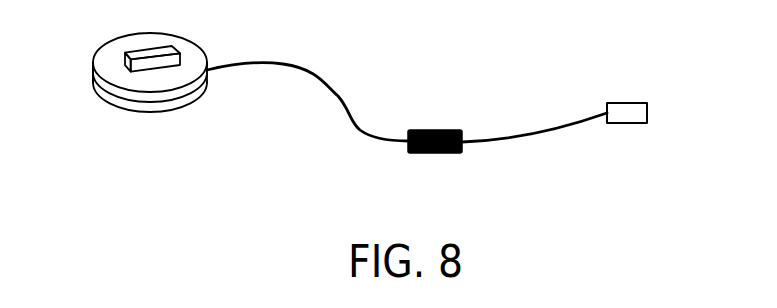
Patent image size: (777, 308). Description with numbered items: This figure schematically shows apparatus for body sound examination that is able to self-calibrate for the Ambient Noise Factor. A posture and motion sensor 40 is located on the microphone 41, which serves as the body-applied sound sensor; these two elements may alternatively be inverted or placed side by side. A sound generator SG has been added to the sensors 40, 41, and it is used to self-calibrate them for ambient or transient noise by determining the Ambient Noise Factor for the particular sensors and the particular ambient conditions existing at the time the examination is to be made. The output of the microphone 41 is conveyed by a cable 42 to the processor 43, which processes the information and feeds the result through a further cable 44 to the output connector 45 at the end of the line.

The posture and motion sensor 40 is at (143, 49).
The microphone 41 is at (98, 87).
The sound generator SG is at (195, 104).
The cable 42 is at (362, 129).
The processor 43 is at (408, 147).
The cable 44 is at (530, 135).
The output connector 45 is at (628, 120).